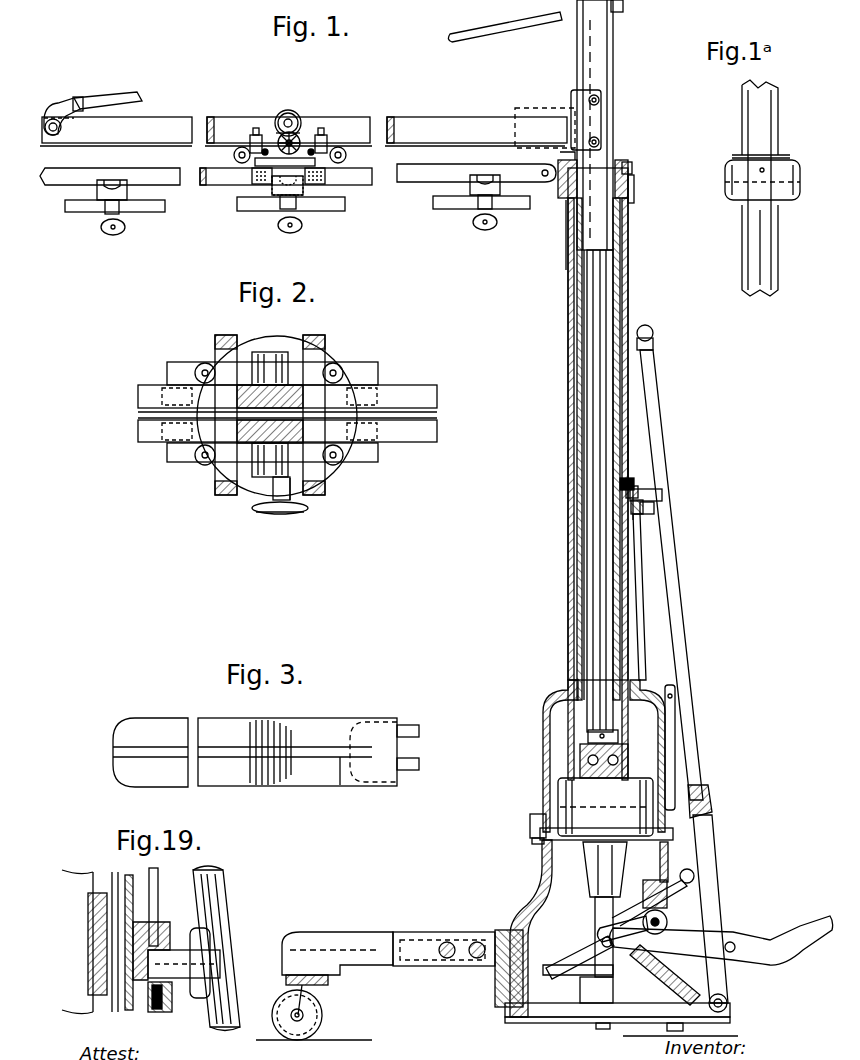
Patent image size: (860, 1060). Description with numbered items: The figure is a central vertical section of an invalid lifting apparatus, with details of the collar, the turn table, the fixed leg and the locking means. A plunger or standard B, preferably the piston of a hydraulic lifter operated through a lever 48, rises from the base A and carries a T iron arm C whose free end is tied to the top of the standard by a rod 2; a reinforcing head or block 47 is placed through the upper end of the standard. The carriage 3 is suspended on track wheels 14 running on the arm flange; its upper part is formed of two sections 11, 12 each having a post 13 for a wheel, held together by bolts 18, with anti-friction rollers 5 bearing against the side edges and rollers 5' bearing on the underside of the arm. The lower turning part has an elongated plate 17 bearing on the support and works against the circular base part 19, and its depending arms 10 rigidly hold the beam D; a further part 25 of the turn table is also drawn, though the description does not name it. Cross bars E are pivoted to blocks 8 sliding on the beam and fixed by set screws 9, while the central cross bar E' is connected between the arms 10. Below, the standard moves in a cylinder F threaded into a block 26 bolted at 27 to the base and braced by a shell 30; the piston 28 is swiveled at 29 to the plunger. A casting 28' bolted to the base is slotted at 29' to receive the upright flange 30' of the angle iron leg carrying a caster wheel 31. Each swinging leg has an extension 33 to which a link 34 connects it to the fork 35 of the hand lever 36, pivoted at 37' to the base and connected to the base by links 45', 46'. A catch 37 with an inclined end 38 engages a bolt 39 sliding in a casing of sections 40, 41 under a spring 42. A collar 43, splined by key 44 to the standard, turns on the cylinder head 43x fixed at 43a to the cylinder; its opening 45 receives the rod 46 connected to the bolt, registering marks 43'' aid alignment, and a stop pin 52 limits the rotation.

In FIG. 1, the rod 2 is at (510, 22).
In FIG. 1, the carriage 3 is at (300, 150).
In FIG. 2, the carriage 3 is at (296, 480).
In FIG. 1, the anti-friction rollers 5 is at (304, 119).
In FIG. 2, the anti-friction rollers 5 is at (280, 415).
In FIG. 1, the rollers 5' is at (291, 158).
In FIG. 2, the rollers 5' is at (293, 410).
In FIG. 1, the blocks 8 is at (100, 190).
In FIG. 1, the set screws 9 is at (122, 232).
In FIG. 1, the depending arms 10 is at (258, 178).
In FIG. 2, the section of upper part 11 is at (240, 378).
In FIG. 2, the section of upper part 12 is at (252, 470).
In FIG. 2, the post 13 is at (268, 362).
In FIG. 1, the track wheels 14 is at (294, 118).
In FIG. 2, the track wheels 14 is at (258, 400).
In FIG. 1, the elongated plate 17 is at (272, 184).
In FIG. 1, the bolts 18 is at (265, 148).
In FIG. 2, the bolts 18 is at (326, 490).
In FIG. 1, the base part 19 is at (318, 164).
In FIG. 1, the disk 25 is at (282, 128).
In FIG. 2, the disk 25 is at (290, 515).
In FIG. 1, the block or support 26 is at (560, 808).
In FIG. 1, the bolts 27 is at (531, 840).
In FIG. 1, the piston 28 is at (560, 761).
In FIG. 1, the casting 28' is at (444, 934).
In FIG. 3, the casting 28' is at (389, 732).
In FIG. 1, the swivel 29 is at (561, 728).
In FIG. 3, the slot 29' is at (340, 791).
In FIG. 1, the shell or casing 30 is at (591, 751).
In FIG. 1, the upright flange of angle iron leg 30' is at (337, 939).
In FIG. 3, the upright flange of angle iron leg 30' is at (255, 738).
In FIG. 1, the caster wheel 31 is at (322, 1018).
In FIG. 1, the extension 33 is at (585, 1000).
In FIG. 1, the link 34 is at (600, 952).
In FIG. 1, the fork 35 is at (712, 852).
In FIG. 1, the handle or lever 36 is at (683, 650).
In FIG. 19, the handle or lever 36 is at (212, 915).
In FIG. 1, the catch 37 is at (671, 472).
In FIG. 19, the catch 37 is at (208, 963).
In FIG. 1, the pivot 37' is at (744, 1005).
In FIG. 1, the inclined end 38 is at (650, 485).
In FIG. 19, the inclined end 38 is at (150, 962).
In FIG. 1, the bolt 39 is at (634, 508).
In FIG. 19, the bolt 39 is at (168, 1010).
In FIG. 1, the casing section 40 is at (633, 490).
In FIG. 19, the casing section 40 is at (140, 1005).
In FIG. 1, the casing section 41 is at (644, 597).
In FIG. 1, the spring 42 is at (650, 514).
In FIG. 19, the spring 42 is at (158, 1014).
In FIG. 1, the collar or head 43 is at (617, 160).
In FIG. 1, the fixing point of cylinder head 43a is at (566, 245).
In FIG. 1, the cylinder head 43x is at (634, 198).
In FIG. 1A, the registering marks or pins 43'' is at (775, 188).
In FIG. 1, the spline key 44 is at (586, 319).
In FIG. 1, the opening 45 is at (651, 177).
In FIG. 1, the link 45' is at (709, 747).
In FIG. 1, the rod 46 is at (626, 474).
In FIG. 19, the rod 46 is at (227, 948).
In FIG. 1, the link 46' is at (720, 786).
In FIG. 1, the reinforcing head or block 47 is at (618, 14).
In FIG. 1, the lever 48 is at (755, 956).
In FIG. 1, the stop pin 52 is at (571, 126).
In FIG. 1, the base A is at (530, 890).
In FIG. 1, the plunger or standard B is at (600, 65).
In FIG. 19, the plunger or standard B is at (100, 918).
In FIG. 1, the arm C is at (450, 124).
In FIG. 2, the arm C is at (414, 432).
In FIG. 1, the beam D is at (360, 182).
In FIG. 1, the cross bars E is at (297, 222).
In FIG. 1, the central cross bar E' is at (295, 220).
In FIG. 1, the cylinder F is at (576, 396).
In FIG. 19, the cylinder F is at (133, 975).